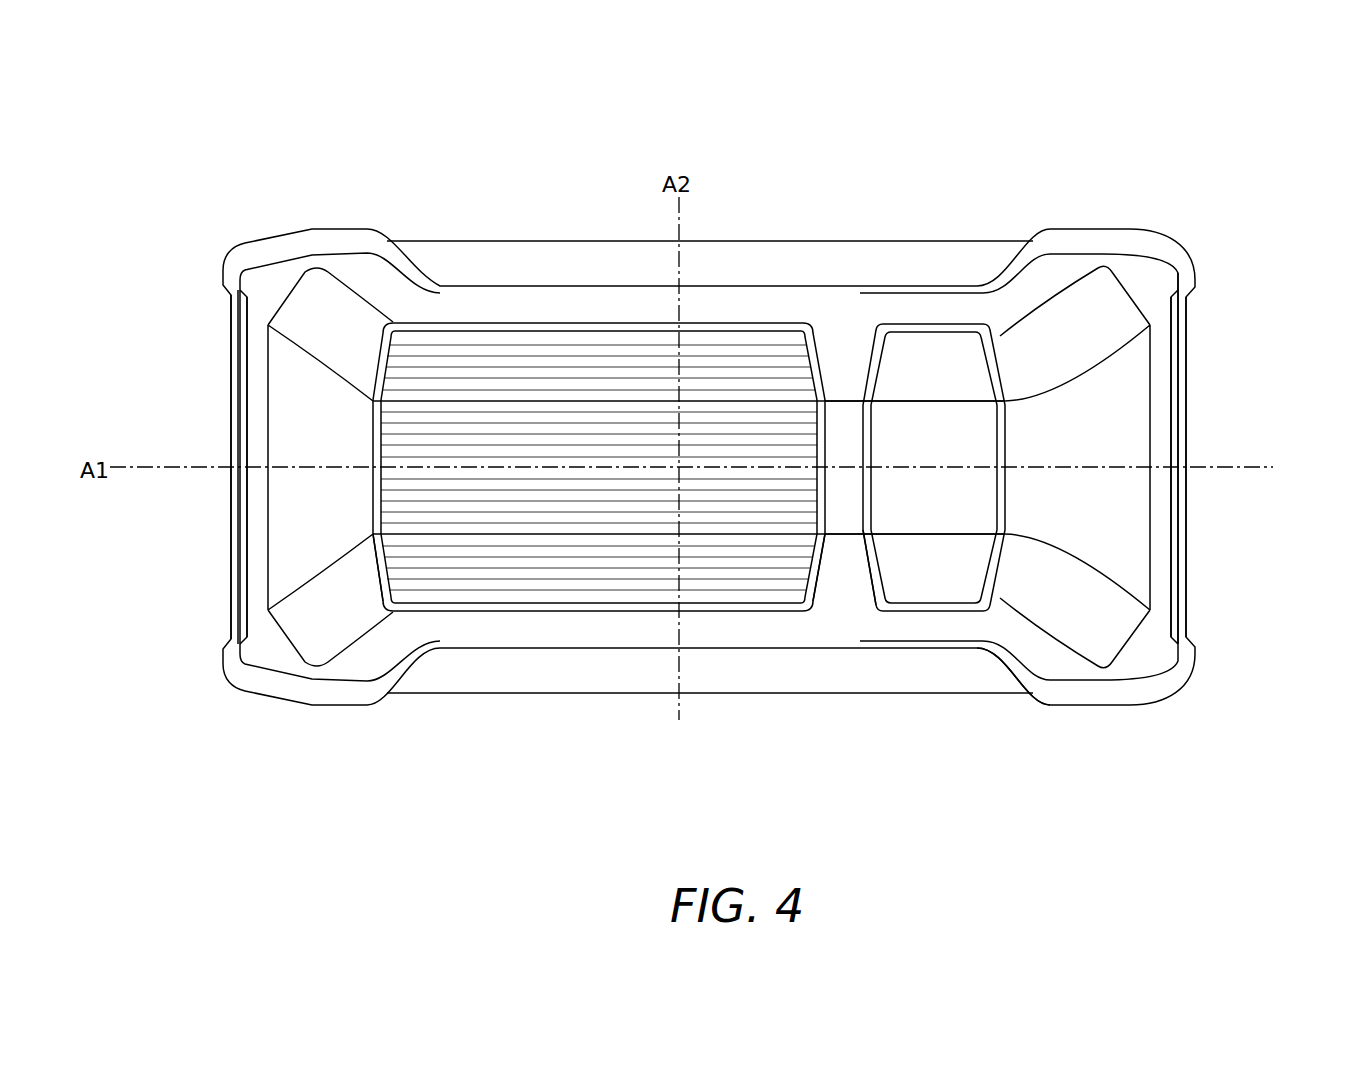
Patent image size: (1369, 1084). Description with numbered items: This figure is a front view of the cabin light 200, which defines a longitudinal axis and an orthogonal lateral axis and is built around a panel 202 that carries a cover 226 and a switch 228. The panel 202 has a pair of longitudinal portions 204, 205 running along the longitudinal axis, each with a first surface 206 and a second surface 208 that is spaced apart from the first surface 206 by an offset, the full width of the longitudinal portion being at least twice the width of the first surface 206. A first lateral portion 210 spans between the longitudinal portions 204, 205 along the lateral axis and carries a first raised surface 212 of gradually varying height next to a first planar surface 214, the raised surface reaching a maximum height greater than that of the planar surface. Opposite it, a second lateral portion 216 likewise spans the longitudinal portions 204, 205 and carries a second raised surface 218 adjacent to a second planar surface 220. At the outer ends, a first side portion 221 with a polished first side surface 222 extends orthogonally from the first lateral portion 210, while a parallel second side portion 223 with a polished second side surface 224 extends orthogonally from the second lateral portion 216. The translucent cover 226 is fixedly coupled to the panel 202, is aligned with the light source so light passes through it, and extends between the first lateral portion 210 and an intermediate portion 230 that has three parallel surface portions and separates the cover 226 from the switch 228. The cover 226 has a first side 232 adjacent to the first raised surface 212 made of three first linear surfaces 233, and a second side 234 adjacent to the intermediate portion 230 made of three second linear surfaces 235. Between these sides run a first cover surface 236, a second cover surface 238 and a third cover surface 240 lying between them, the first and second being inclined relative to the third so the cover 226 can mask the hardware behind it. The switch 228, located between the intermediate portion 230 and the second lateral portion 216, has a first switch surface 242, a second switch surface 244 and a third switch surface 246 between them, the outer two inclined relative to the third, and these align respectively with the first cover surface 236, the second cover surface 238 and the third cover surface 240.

The cabin light 200 is at (1189, 130).
The panel 202 is at (311, 195).
The longitudinal portion 204 is at (730, 252).
The longitudinal portion 205 is at (702, 682).
The first surface 206 is at (973, 257).
The second surface 208 is at (907, 305).
The first lateral portion 210 is at (238, 498).
The first raised surface 212 is at (280, 563).
The first planar surface 214 is at (258, 530).
The second lateral portion 216 is at (1175, 502).
The second raised surface 218 is at (1128, 550).
The second planar surface 220 is at (1162, 527).
The first side portion 221 is at (223, 388).
The first side surface 222 is at (235, 428).
The second side portion 223 is at (1188, 447).
The second side surface 224 is at (1182, 420).
The cover 226 is at (570, 590).
The switch 228 is at (973, 647).
The intermediate portion 230 is at (863, 345).
The first side 232 is at (398, 552).
The first linear surfaces 233 is at (380, 443).
The second side 234 is at (793, 550).
The second linear surfaces 235 is at (817, 440).
The first cover surface 236 is at (587, 350).
The second cover surface 238 is at (518, 585).
The third cover surface 240 is at (467, 427).
The first switch surface 242 is at (953, 352).
The second switch surface 244 is at (895, 592).
The third switch surface 246 is at (973, 432).